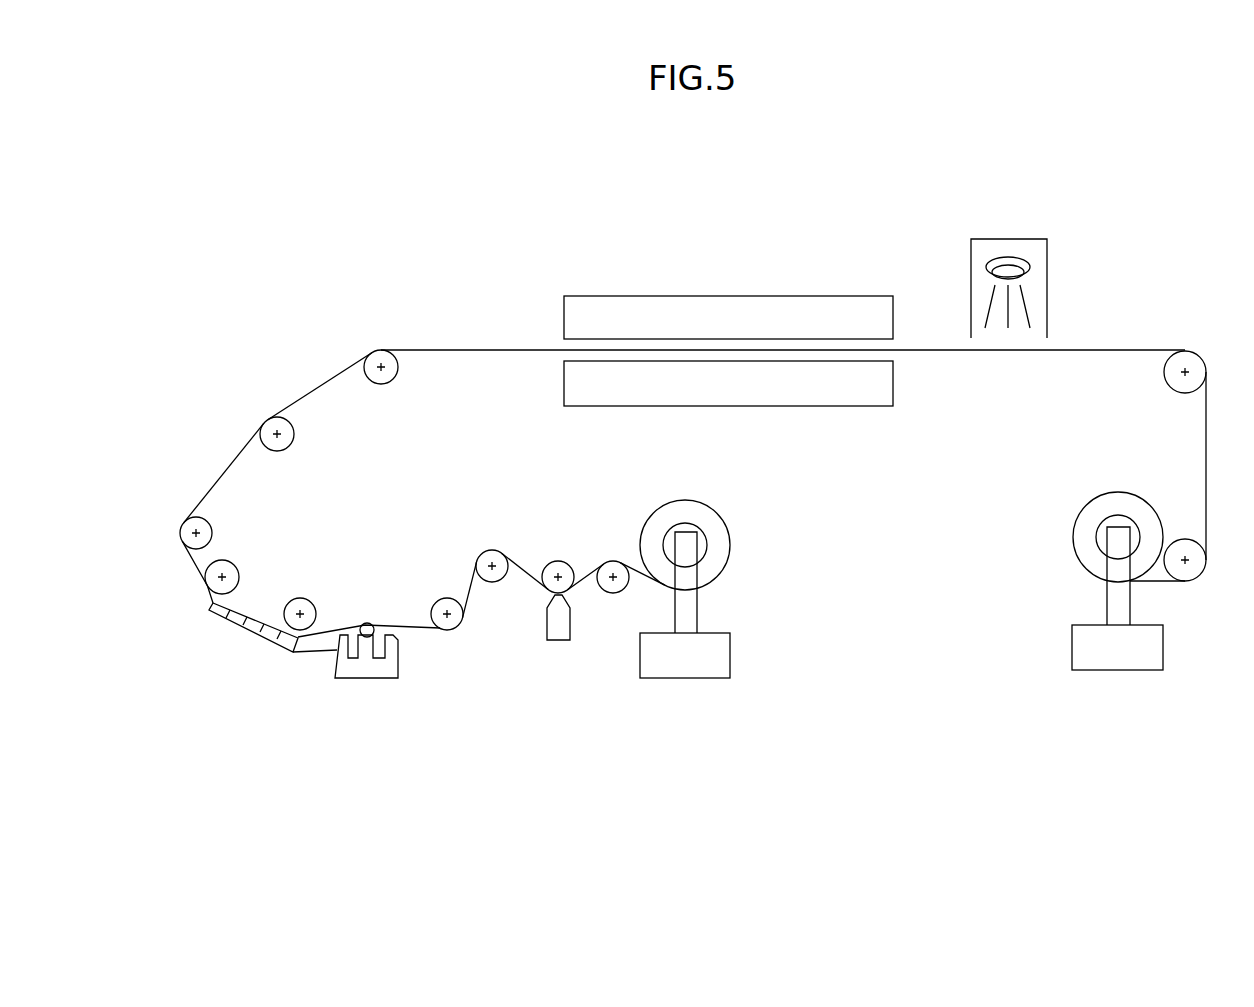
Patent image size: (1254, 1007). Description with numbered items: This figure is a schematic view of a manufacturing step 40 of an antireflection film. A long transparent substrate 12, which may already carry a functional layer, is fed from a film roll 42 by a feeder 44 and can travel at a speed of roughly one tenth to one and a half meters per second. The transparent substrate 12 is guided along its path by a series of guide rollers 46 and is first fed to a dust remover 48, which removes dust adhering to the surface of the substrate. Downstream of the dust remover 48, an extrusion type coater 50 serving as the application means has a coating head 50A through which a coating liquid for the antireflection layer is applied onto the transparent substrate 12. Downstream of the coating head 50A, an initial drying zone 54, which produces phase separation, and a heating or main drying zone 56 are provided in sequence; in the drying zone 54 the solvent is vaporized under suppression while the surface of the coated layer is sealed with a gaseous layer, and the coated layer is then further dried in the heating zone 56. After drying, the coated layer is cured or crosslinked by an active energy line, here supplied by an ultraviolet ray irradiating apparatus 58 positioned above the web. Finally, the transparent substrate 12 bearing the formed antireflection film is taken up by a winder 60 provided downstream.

The manufacturing step 40 is at (1196, 171).
The transparent substrate 12 is at (641, 585).
The film roll 42 is at (685, 500).
The feeder 44 is at (685, 679).
The guide roller 46 is at (295, 434).
The dust remover 48 is at (558, 641).
The extrusion type coater 50 is at (366, 680).
The coating head 50A is at (368, 623).
The drying zone 54 is at (252, 625).
The heating zone 56 is at (647, 297).
The ultraviolet ray irradiating apparatus 58 is at (1048, 278).
The winder 60 is at (1118, 671).